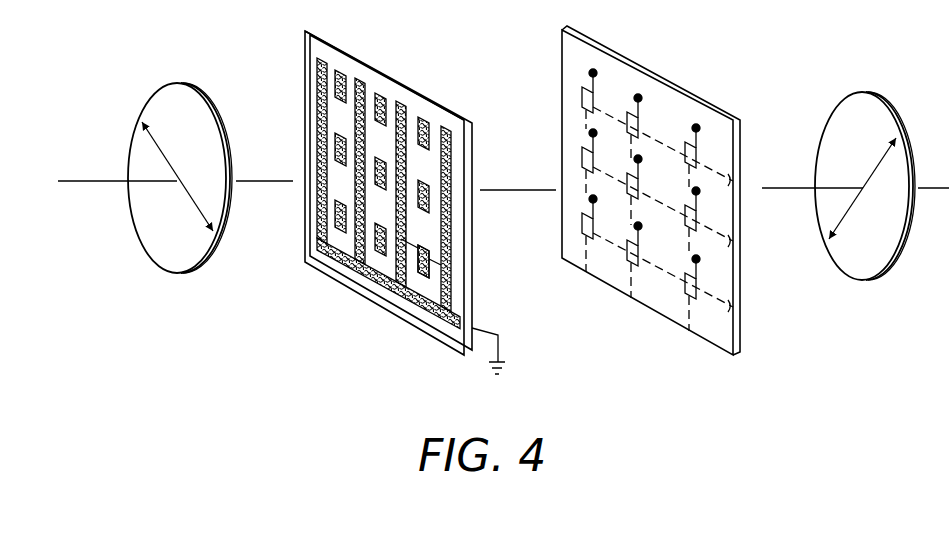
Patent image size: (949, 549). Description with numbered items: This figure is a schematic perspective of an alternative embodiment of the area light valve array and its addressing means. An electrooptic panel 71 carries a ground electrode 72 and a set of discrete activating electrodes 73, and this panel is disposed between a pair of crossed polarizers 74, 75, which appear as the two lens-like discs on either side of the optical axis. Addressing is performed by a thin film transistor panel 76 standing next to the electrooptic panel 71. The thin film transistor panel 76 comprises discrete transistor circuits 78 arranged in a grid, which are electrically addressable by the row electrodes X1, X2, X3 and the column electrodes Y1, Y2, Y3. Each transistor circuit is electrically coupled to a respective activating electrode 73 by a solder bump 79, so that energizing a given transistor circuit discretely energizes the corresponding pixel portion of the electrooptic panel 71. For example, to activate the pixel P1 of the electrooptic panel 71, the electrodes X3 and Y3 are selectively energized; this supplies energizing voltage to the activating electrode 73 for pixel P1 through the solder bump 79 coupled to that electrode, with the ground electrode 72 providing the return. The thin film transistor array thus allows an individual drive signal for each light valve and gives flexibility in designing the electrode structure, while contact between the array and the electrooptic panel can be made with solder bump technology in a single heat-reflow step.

The electrooptic panel 71 is at (371, 63).
The ground electrode 72 is at (340, 251).
The discrete activating electrodes 73 is at (342, 201).
The crossed polarizer 74 is at (178, 84).
The crossed polarizer 75 is at (878, 92).
The thin film transistor (TFT) panel 76 is at (653, 74).
The discrete transistor circuits 78 is at (582, 96).
The solder bumps 79 is at (637, 96).
The pixel P1 is at (432, 267).
The electrode X1 is at (677, 156).
The electrode X2 is at (678, 219).
The electrode X3 is at (678, 283).
The electrode Y1 is at (581, 265).
The electrode Y2 is at (626, 290).
The electrode Y3 is at (685, 323).